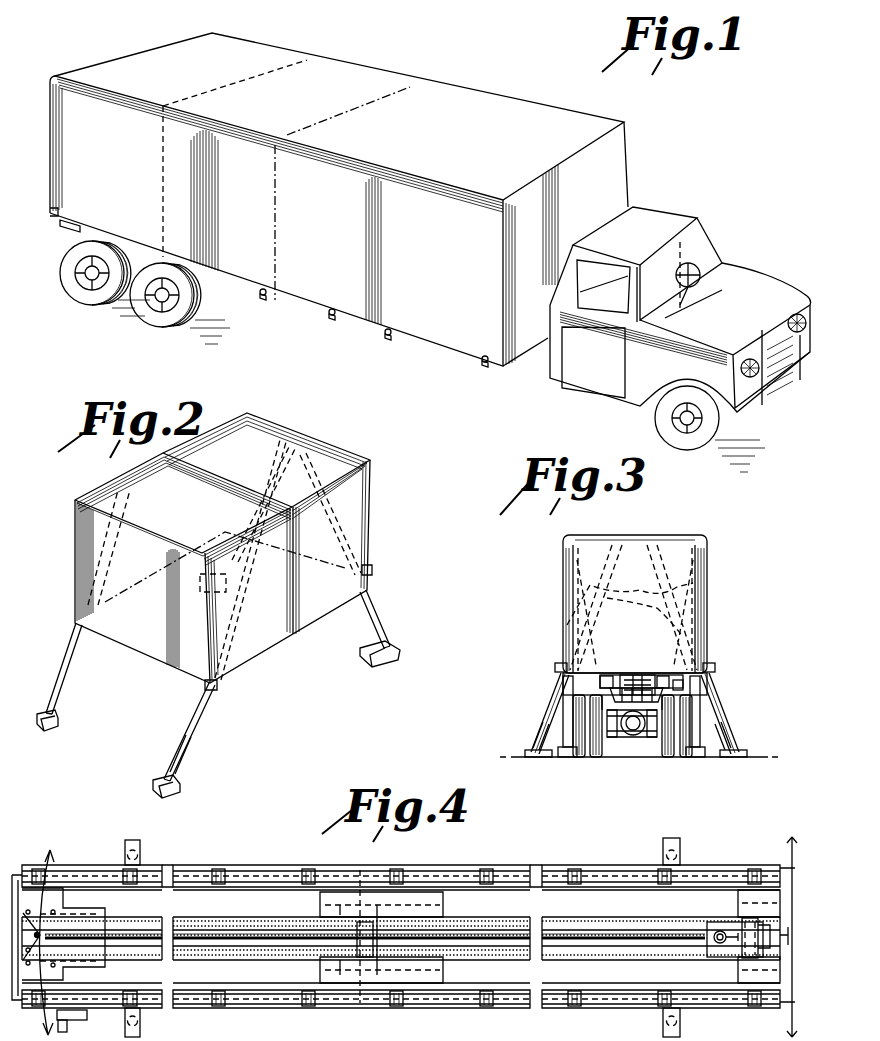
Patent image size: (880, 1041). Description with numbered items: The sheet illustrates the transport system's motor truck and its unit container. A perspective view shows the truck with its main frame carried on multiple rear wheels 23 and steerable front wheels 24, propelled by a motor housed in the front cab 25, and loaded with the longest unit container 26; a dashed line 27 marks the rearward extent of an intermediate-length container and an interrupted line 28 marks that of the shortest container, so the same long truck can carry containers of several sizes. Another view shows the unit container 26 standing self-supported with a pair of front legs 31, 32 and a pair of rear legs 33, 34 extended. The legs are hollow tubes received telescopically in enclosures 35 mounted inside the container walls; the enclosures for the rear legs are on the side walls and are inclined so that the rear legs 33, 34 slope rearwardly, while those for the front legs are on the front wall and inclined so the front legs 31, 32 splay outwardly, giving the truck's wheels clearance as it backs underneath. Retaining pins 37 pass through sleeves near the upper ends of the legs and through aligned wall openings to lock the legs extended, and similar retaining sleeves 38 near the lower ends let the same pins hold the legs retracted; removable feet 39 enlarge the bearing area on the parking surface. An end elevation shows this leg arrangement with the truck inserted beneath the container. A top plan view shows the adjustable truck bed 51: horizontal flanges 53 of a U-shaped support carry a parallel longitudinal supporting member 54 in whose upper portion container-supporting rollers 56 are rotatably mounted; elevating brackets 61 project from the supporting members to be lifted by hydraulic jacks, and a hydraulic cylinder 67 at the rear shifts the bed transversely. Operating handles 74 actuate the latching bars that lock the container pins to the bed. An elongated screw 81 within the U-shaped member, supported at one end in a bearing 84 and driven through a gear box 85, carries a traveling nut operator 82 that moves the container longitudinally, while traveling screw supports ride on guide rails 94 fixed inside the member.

In FIG. 1, the rear wheels 23 is at (162, 325).
In FIG. 3, the rear wheels 23 is at (592, 757).
In FIG. 1, the front wheels 24 is at (688, 452).
In FIG. 1, the front cab 25 is at (760, 290).
In FIG. 1, the unit container 26 is at (339, 199).
In FIG. 2, the unit container 26 is at (372, 500).
In FIG. 3, the unit container 26 is at (698, 537).
In FIG. 1, the dashed line 27 is at (247, 82).
In FIG. 1, the interrupted line 28 is at (363, 108).
In FIG. 2, the front leg 31 is at (232, 536).
In FIG. 3, the front leg 31 is at (555, 718).
In FIG. 2, the front leg 32 is at (382, 612).
In FIG. 3, the front leg 32 is at (715, 712).
In FIG. 2, the rear leg 33 is at (68, 675).
In FIG. 3, the rear leg 33 is at (560, 686).
In FIG. 2, the rear leg 34 is at (195, 726).
In FIG. 3, the rear leg 34 is at (706, 683).
In FIG. 2, the enclosures 35 is at (113, 548).
In FIG. 3, the enclosures 35 is at (605, 598).
In FIG. 1, the retaining pins 37 is at (62, 213).
In FIG. 2, the retaining pins 37 is at (368, 566).
In FIG. 3, the retaining pins 37 is at (562, 664).
In FIG. 2, the retaining sleeves 38 is at (183, 768).
In FIG. 3, the retaining sleeves 38 is at (560, 745).
In FIG. 2, the removable feet 39 is at (205, 588).
In FIG. 3, the removable feet 39 is at (538, 758).
In FIG. 3, the truck bed 51 is at (654, 675).
In FIG. 4, the truck bed 51 is at (489, 862).
In FIG. 4, the horizontal flanges 53 is at (67, 897).
In FIG. 4, the supporting member 54 is at (462, 868).
In FIG. 3, the container-supporting rollers 56 is at (622, 678).
In FIG. 4, the container-supporting rollers 56 is at (72, 866).
In FIG. 4, the elevating brackets 61 is at (141, 852).
In FIG. 4, the hydraulic cylinder 67 is at (68, 1022).
In FIG. 1, the operating handles 74 is at (485, 363).
In FIG. 4, the elongated screw 81 is at (577, 928).
In FIG. 4, the traveling nut operator 82 is at (705, 940).
In FIG. 4, the bearing 84 is at (760, 942).
In FIG. 4, the gear box 85 is at (792, 866).
In FIG. 4, the guide rails 94 is at (247, 925).